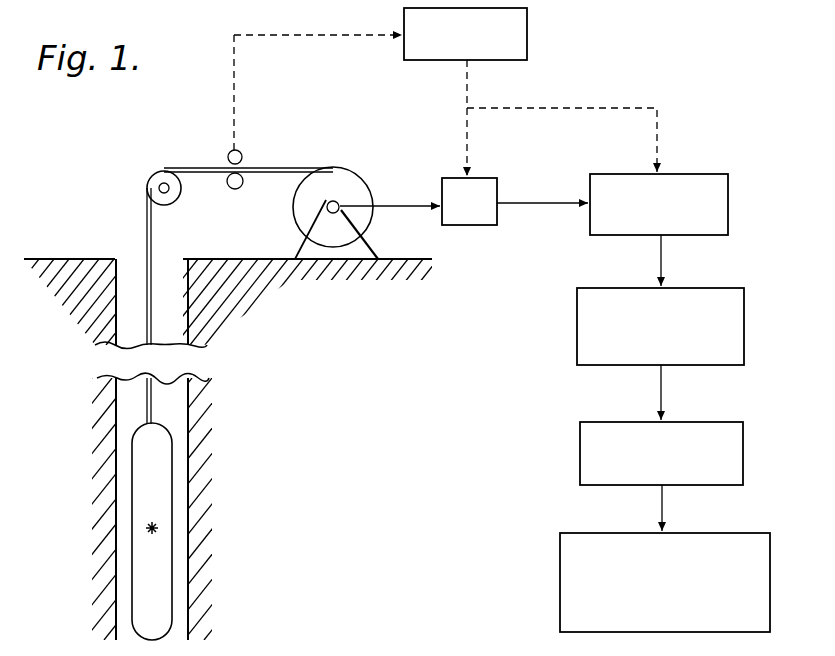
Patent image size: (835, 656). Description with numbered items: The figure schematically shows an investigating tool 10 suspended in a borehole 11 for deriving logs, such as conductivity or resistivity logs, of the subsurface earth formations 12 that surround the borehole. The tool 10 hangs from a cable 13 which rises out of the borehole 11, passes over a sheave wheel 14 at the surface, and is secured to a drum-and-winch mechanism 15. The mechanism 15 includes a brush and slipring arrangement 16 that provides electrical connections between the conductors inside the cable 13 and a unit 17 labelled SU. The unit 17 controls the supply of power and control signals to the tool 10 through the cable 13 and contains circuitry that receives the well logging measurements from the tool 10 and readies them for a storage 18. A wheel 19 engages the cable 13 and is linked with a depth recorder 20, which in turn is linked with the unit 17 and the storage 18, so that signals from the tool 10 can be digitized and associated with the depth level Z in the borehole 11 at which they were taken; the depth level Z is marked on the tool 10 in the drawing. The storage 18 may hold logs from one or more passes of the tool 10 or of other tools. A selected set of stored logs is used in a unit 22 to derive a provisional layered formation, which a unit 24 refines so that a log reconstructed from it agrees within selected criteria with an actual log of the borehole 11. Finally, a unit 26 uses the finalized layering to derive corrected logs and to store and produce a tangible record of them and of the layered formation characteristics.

The investigating tool 10 is at (157, 470).
The borehole 11 is at (180, 398).
The subsurface earth formations 12 is at (291, 432).
The cable 13 is at (152, 236).
The sheave wheel 14 is at (146, 190).
The drum-and-winch mechanism 15 is at (320, 243).
The brush and slipring arrangement 16 is at (345, 182).
The unit SU 17 is at (485, 178).
The storage 18 is at (680, 180).
The wheel 19 is at (240, 152).
The depth recorder 20 is at (528, 22).
The unit for deriving provisional layered formation 22 is at (713, 290).
The layering finalization unit 24 is at (698, 421).
The corrected log and layering storage and recording unit 26 is at (707, 535).
The depth level Z is at (160, 528).